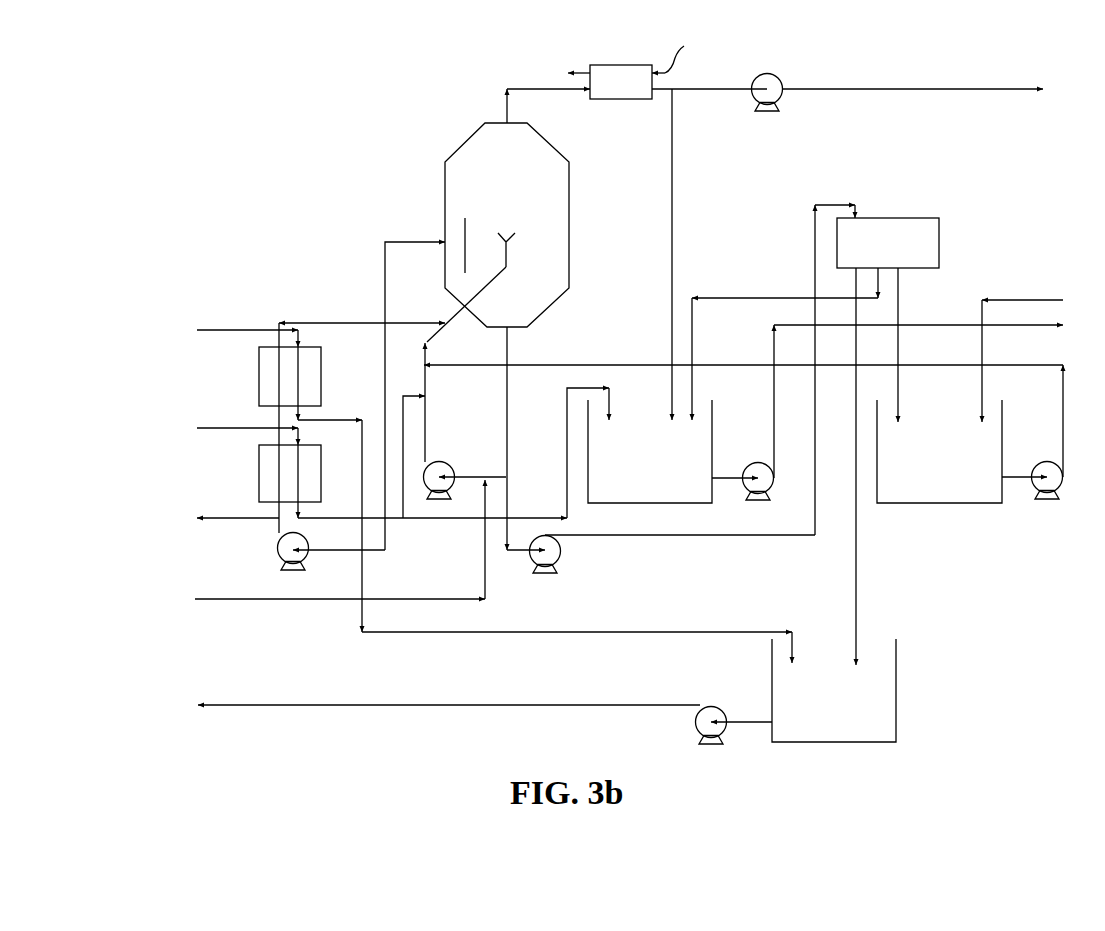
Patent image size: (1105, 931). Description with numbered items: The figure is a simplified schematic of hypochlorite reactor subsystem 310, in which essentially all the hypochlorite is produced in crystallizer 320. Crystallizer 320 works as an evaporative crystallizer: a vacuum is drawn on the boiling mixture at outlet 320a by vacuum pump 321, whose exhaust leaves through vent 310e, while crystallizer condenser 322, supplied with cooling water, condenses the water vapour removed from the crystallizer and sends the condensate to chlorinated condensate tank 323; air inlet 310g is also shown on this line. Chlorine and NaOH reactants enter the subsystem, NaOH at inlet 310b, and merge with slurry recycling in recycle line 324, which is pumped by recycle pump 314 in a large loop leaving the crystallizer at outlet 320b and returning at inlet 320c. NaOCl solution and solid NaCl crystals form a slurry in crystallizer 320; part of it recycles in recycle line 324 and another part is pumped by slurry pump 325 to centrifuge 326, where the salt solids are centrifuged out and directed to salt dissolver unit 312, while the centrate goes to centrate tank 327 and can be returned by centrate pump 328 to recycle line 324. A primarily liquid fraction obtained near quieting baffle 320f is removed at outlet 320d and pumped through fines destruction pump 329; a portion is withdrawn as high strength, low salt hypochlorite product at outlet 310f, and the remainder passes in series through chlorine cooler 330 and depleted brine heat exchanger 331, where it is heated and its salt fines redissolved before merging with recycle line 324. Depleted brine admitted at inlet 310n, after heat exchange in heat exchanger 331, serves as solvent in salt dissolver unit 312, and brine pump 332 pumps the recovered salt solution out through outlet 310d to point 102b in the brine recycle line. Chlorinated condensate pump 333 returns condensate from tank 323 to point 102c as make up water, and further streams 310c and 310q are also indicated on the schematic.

The hypochlorite reactor subsystem 310 is at (311, 98).
The salt dissolver unit 312 is at (880, 715).
The recycle pump 314 is at (446, 469).
The crystallizer 320 is at (569, 196).
The outlet 320a is at (506, 120).
The outlet 320b is at (512, 330).
The inlet 320c is at (466, 306).
The outlet 320d is at (440, 242).
The quieting baffle 320f is at (466, 230).
The vacuum pump 321 is at (773, 87).
The crystallizer condenser 322 is at (648, 98).
The chlorinated condensate tank 323 is at (633, 503).
The recycle line 324 is at (425, 428).
The slurry pump 325 is at (562, 557).
The centrifuge 326 is at (928, 242).
The centrate tank 327 is at (922, 492).
The centrate pump 328 is at (1043, 496).
The fines destruction pump 329 is at (301, 562).
The chlorine cooler 330 is at (310, 480).
The depleted brine heat exchanger 331 is at (310, 377).
The brine pump 332 is at (718, 710).
The chlorinated condensate pump 333 is at (768, 488).
The inlet 310b is at (238, 599).
The feed stream 310c is at (1012, 300).
The outlet 310d is at (322, 705).
The vent 310e is at (965, 89).
The outlet 310f is at (237, 518).
The air inlet 310g is at (715, 87).
The inlet 310n is at (237, 330).
The inlet stream 310q is at (237, 428).
The point 102b is at (191, 693).
The point 102c is at (1040, 330).